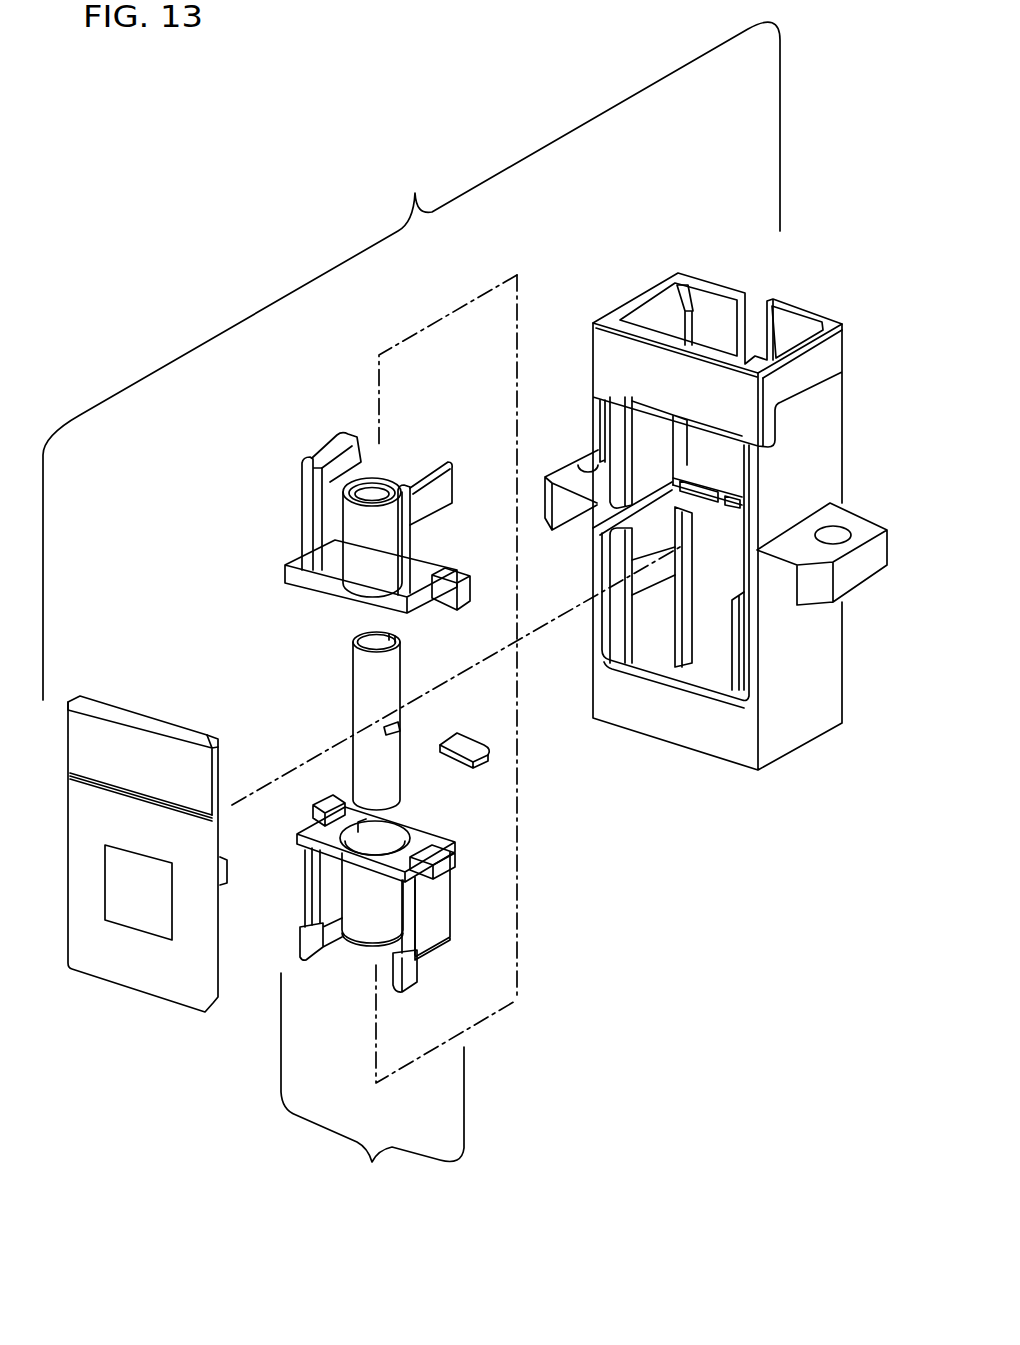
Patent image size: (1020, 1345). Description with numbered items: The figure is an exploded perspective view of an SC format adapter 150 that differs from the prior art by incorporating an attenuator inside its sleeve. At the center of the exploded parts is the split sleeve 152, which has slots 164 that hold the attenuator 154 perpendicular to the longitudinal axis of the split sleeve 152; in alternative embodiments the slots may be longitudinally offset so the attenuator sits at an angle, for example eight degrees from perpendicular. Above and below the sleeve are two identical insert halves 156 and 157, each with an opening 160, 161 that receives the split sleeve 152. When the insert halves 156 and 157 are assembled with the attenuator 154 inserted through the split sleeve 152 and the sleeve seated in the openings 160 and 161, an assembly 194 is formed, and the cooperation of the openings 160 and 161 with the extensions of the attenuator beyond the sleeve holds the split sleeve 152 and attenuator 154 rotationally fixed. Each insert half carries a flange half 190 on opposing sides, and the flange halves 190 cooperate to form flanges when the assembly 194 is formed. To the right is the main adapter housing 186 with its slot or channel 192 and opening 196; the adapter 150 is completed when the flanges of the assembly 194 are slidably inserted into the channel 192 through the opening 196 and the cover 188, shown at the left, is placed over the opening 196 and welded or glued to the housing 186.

The adapter 150 is at (411, 361).
The split sleeve 152 is at (368, 692).
The attenuator 154 is at (470, 747).
The insert half 156 is at (433, 933).
The insert half 157 is at (312, 532).
The opening 160 is at (383, 842).
The opening 161 is at (375, 497).
The slots 164 is at (390, 732).
The main adapter housing 186 is at (593, 342).
The cover 188 is at (60, 783).
The flange half 190 is at (458, 595).
The slot or channel 192 is at (630, 500).
The assembly 194 is at (372, 1084).
The opening 196 is at (718, 675).